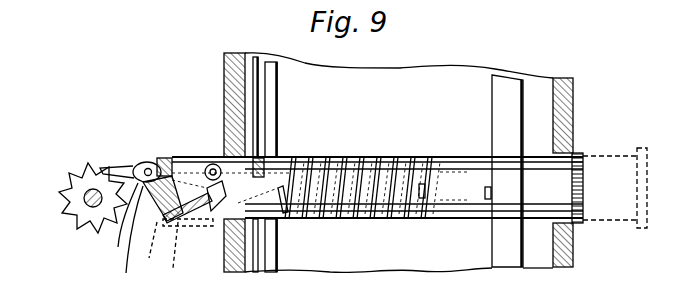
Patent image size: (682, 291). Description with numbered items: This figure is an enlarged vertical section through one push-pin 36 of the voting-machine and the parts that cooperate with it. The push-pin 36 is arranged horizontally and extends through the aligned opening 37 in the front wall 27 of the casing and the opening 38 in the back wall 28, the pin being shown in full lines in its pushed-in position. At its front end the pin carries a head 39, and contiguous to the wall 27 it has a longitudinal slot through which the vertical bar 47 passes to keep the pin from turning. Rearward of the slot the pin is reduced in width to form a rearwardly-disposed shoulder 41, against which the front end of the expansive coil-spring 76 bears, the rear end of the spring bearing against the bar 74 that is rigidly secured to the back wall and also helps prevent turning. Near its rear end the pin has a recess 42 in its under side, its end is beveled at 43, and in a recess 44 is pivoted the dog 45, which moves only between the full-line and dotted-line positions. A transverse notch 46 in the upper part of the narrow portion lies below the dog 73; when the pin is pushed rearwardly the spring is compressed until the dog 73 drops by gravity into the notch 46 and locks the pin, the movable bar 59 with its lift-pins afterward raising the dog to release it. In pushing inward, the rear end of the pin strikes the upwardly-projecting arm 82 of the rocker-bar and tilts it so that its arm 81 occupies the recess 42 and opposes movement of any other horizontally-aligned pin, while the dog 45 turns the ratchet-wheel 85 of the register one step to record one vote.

The wall 27 is at (575, 90).
The end block 28 is at (226, 76).
The push-pins 36 is at (377, 187).
The opening 37 is at (553, 157).
The opening 38 is at (221, 160).
The head 39 is at (584, 187).
The shoulder 41 is at (421, 168).
The recess 42 is at (213, 210).
The bevel 43 is at (117, 236).
The recess 44 is at (119, 222).
The dog 45 is at (116, 167).
The transverse notch 46 is at (290, 172).
The vertical bar 47 is at (492, 106).
The movable bar 59 is at (255, 60).
The dog 73 is at (259, 158).
The bar 74 is at (278, 89).
The expansive coil-spring 76 is at (361, 165).
The arm 81 is at (186, 239).
The arm 82 is at (145, 251).
The ratchet-wheel 85 is at (61, 184).